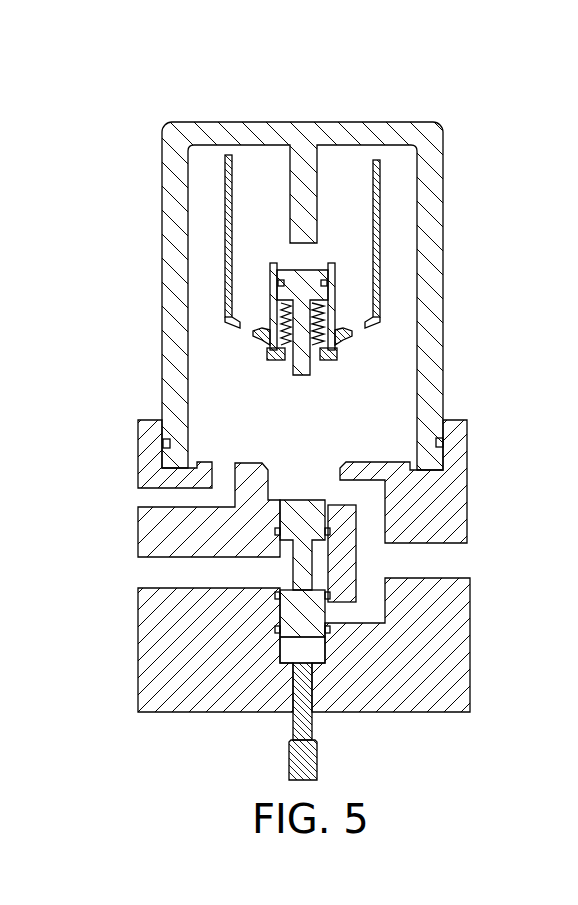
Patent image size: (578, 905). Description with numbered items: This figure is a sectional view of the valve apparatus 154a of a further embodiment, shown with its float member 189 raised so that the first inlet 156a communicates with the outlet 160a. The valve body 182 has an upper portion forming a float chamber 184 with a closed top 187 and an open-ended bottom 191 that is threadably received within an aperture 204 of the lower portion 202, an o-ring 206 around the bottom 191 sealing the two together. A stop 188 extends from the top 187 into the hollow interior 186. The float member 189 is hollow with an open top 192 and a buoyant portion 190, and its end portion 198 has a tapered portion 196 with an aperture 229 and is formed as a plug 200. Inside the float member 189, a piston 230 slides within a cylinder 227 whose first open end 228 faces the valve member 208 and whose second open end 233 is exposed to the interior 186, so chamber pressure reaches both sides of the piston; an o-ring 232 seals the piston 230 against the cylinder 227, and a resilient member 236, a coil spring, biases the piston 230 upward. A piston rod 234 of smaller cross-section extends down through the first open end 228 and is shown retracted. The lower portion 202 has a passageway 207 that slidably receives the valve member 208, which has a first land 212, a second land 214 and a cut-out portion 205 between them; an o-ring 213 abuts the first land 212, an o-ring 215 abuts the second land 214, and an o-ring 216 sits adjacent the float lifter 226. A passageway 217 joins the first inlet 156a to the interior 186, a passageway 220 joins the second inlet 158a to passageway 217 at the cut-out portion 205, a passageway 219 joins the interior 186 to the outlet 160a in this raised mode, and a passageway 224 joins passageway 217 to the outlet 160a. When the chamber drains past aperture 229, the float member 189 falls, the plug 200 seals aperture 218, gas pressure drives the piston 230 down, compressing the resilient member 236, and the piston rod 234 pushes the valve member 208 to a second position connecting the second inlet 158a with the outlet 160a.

The valve apparatus 154a is at (158, 118).
The valve body 182 is at (245, 275).
The float chamber 184 is at (162, 200).
The interior 186 is at (249, 439).
The top 187 is at (318, 123).
The stop 188 is at (318, 205).
The float member 189 is at (218, 290).
The buoyant portion 190 is at (233, 190).
The bottom 191 is at (186, 455).
The open top 192 is at (377, 160).
The tapered portion 196 is at (380, 326).
The end portion 198 is at (255, 347).
The plug 200 is at (326, 362).
The lower portion 202 is at (136, 680).
The aperture 204 is at (443, 458).
The cut-out portion 205 is at (372, 603).
The o-ring 206 is at (445, 446).
The passageway 207 is at (280, 655).
The valve member 208 is at (279, 548).
The first land 212 is at (338, 520).
The o-ring 213 is at (338, 540).
The second land 214 is at (372, 604).
The o-ring 215 is at (275, 598).
The o-ring 216 is at (328, 631).
The passageway 217 is at (200, 488).
The aperture 218 is at (395, 478).
The passageway 219 is at (375, 500).
The passageway 220 is at (190, 585).
The passageway 224 is at (373, 610).
The float lifter 226 is at (289, 758).
The cylinder 227 is at (345, 305).
The first open end 228 is at (316, 373).
The aperture 229 is at (348, 340).
The piston 230 is at (331, 262).
The o-ring 232 is at (335, 280).
The second open end 233 is at (378, 295).
The piston rod 234 is at (300, 378).
The resilient member 236 is at (262, 324).
The first inlet 156a is at (140, 500).
The second inlet 158a is at (140, 570).
The outlet 160a is at (478, 565).